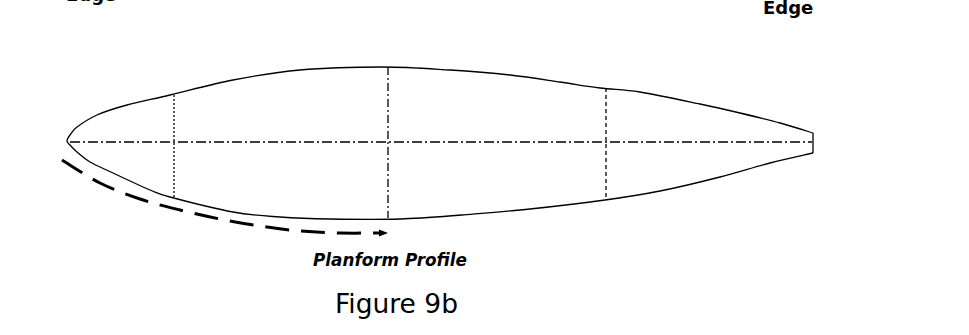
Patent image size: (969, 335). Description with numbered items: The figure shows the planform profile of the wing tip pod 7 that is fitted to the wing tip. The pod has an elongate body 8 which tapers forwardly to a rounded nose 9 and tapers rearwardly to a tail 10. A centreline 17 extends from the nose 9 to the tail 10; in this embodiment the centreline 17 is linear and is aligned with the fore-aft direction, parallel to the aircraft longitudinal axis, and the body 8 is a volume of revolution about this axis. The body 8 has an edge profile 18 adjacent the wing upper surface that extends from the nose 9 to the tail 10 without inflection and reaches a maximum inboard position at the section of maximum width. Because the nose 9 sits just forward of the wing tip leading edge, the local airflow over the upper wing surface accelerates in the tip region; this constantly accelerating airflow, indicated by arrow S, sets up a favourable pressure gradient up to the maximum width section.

The wing tip pod 7 is at (652, 115).
The elongate body 8 is at (510, 107).
The nose 9 is at (51, 160).
The tail 10 is at (824, 138).
The centreline 17 is at (274, 142).
The edge profile 18 is at (462, 215).
The arrow indicating accelerating airflow S is at (188, 212).